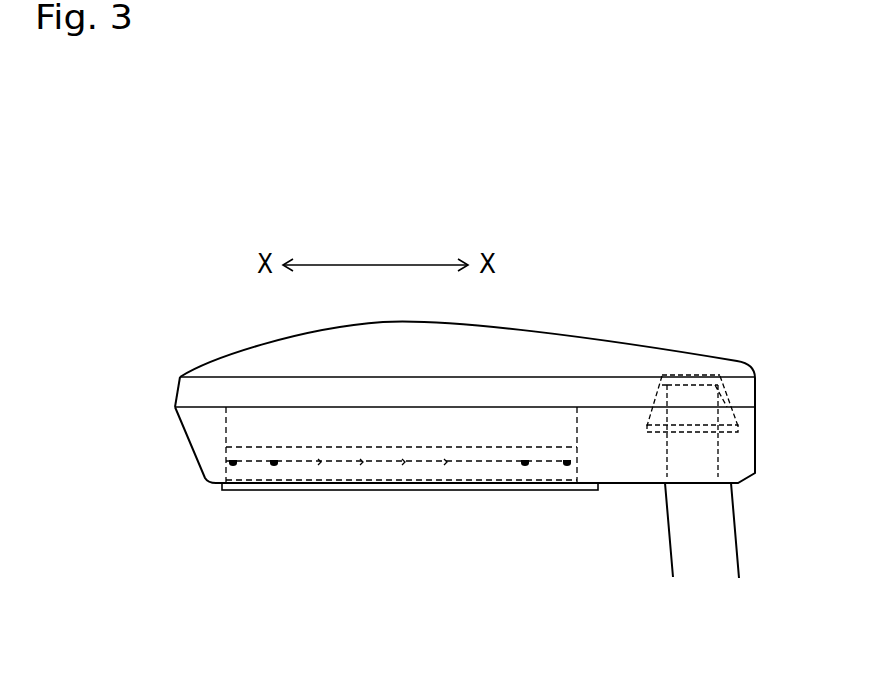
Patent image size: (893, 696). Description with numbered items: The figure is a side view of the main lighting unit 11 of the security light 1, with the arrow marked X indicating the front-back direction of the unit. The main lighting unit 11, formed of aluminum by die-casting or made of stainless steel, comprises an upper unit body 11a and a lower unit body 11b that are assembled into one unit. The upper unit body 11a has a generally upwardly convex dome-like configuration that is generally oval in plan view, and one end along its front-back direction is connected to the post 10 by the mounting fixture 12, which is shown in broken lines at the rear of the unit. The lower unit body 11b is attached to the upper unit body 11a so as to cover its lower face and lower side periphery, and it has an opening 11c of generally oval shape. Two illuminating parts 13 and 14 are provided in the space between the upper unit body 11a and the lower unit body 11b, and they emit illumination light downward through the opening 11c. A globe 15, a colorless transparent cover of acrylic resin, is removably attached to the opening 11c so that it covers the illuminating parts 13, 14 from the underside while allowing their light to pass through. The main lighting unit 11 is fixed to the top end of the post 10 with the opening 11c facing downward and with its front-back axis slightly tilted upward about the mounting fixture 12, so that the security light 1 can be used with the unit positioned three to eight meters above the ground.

The security light 1 is at (440, 392).
The post 10 is at (738, 548).
The main lighting unit 11 is at (460, 386).
The upper unit body 11a is at (582, 335).
The lower unit body 11b is at (195, 455).
The opening 11c is at (578, 484).
The mounting fixture 12 is at (737, 367).
The illuminating part 13 is at (305, 474).
The illuminating part 14 is at (401, 454).
The globe 15 is at (395, 490).